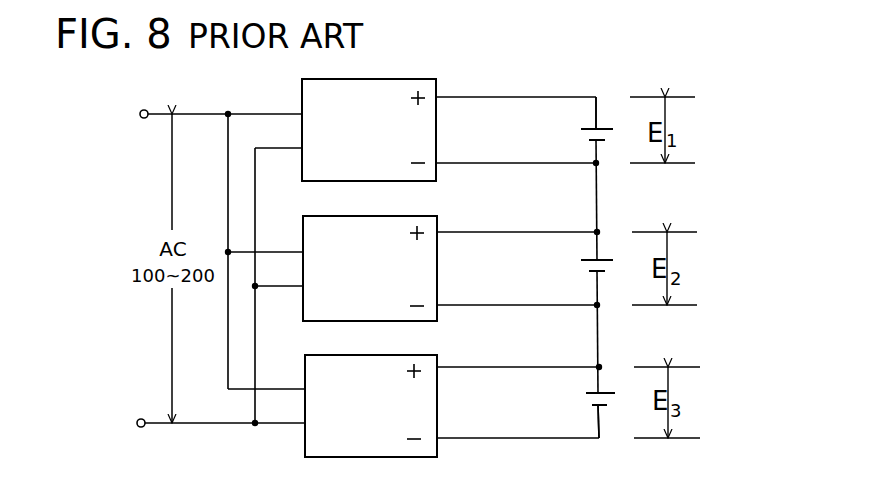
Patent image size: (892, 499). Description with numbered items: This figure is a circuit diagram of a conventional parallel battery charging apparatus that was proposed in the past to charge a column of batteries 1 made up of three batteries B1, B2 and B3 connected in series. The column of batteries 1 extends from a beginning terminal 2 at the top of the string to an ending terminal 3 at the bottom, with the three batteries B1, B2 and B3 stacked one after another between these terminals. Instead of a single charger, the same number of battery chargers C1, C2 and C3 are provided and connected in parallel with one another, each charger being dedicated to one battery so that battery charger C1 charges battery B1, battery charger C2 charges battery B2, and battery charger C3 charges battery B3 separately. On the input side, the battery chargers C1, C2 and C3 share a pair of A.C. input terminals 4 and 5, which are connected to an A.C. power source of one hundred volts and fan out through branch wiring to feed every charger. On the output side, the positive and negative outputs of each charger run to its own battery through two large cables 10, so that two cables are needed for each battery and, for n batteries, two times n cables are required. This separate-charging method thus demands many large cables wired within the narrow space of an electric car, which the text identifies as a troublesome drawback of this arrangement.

The column of batteries 1 is at (612, 245).
The beginning terminal 2 is at (595, 95).
The ending terminal 3 is at (597, 443).
The A.C. input terminal 4 is at (148, 110).
The A.C. input terminal 5 is at (142, 427).
The large cables 10 is at (485, 98).
The battery charger C1 is at (436, 85).
The battery charger C2 is at (437, 223).
The battery charger C3 is at (437, 362).
The battery B1 is at (606, 154).
The battery B2 is at (607, 283).
The battery B3 is at (609, 417).